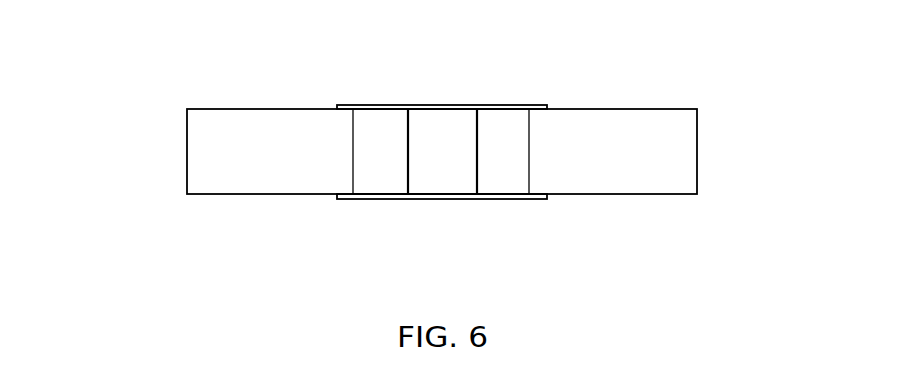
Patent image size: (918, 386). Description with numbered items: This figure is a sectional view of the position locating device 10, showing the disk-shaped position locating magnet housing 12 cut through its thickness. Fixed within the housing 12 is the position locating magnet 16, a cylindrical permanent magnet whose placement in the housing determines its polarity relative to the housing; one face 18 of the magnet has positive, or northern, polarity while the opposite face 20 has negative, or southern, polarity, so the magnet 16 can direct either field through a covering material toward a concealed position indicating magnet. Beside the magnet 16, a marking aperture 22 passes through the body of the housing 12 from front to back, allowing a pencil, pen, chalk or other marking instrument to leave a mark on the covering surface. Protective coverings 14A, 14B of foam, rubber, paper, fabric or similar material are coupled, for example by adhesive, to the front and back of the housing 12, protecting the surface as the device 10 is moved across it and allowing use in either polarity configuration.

The position locating device 10 is at (395, 136).
The position locating magnet housing 12 is at (680, 153).
The protective covering 14A is at (492, 104).
The protective covering 14B is at (489, 198).
The position locating magnet 16 is at (450, 125).
The positive polarity face 18 is at (420, 105).
The negative polarity face 20 is at (412, 199).
The marking aperture 22 is at (518, 178).